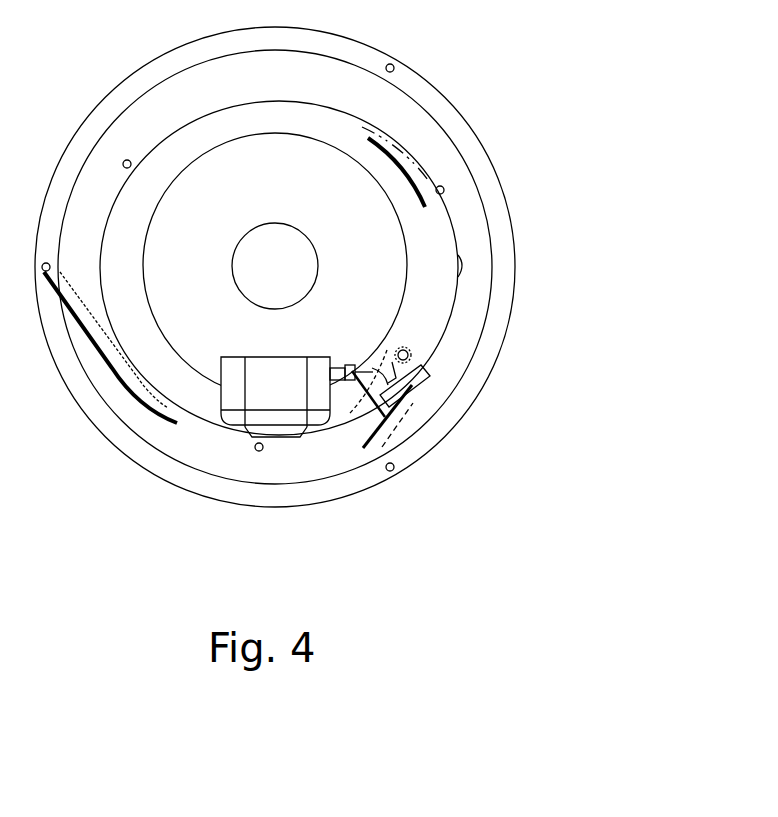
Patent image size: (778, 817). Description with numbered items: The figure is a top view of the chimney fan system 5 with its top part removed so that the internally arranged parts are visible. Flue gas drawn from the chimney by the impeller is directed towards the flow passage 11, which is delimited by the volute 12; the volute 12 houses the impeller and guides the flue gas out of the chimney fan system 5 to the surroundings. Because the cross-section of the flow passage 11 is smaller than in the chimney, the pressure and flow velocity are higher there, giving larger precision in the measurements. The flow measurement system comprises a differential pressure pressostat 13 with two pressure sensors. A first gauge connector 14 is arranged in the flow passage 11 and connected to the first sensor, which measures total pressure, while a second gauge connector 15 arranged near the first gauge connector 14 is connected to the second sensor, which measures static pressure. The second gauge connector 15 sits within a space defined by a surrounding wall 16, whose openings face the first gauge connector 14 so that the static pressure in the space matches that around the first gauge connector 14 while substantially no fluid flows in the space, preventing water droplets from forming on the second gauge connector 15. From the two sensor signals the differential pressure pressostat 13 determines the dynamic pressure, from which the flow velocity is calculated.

The chimney fan system 5 is at (495, 95).
The flow passage 11 is at (422, 284).
The volute 12 is at (425, 207).
The differential pressure pressostat 13 is at (242, 377).
The first gauge connector 14 is at (387, 393).
The second gauge connector 15 is at (352, 373).
The surrounding wall 16 is at (388, 360).